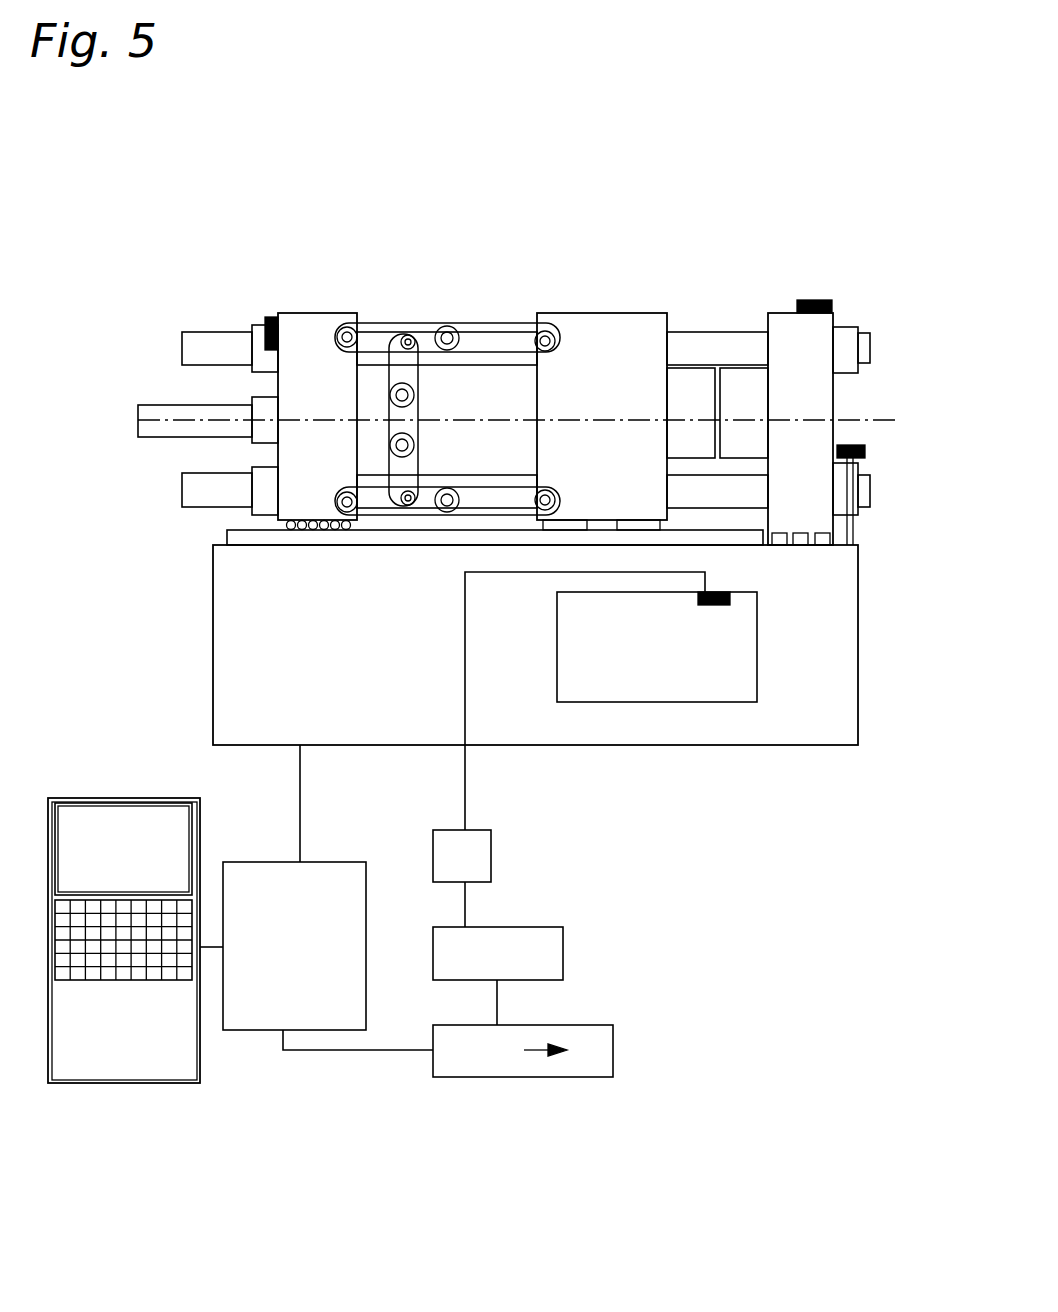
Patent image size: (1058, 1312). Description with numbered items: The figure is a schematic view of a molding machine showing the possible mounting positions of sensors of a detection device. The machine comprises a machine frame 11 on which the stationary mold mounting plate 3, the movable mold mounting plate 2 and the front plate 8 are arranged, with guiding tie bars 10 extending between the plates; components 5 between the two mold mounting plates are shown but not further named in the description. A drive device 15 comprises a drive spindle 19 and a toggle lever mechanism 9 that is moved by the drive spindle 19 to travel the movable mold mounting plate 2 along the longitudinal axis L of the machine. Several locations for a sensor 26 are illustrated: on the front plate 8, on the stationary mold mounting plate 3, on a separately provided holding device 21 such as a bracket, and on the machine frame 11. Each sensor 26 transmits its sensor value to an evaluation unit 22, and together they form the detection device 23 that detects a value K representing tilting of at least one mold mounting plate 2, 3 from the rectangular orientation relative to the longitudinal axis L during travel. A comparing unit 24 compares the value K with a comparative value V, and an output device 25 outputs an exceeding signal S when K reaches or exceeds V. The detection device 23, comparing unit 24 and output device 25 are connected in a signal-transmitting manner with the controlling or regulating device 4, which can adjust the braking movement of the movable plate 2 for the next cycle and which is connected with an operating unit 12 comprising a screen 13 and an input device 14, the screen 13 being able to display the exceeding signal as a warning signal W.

The movable mold mounting plate 2 is at (617, 340).
The stationary mold mounting plate 3 is at (785, 350).
The controlling or regulating device 4 is at (243, 1030).
The mold halves 5 is at (693, 392).
The front plate 8 is at (292, 327).
The toggle lever mechanism 9 is at (455, 295).
The guiding tie bars 10 is at (705, 352).
The machine frame 11 is at (810, 638).
The operating unit 12 is at (80, 1083).
The screen 13 is at (102, 798).
The input device 14 is at (125, 947).
The drive device 15 is at (349, 295).
The drive spindle 19 is at (237, 410).
The holding device 21 is at (852, 515).
The evaluation unit 22 is at (491, 855).
The detection device 23 is at (569, 727).
The comparing unit 24 is at (515, 927).
The output device 25 is at (555, 1025).
The sensor 26 is at (267, 318).
The longitudinal axis L is at (590, 418).